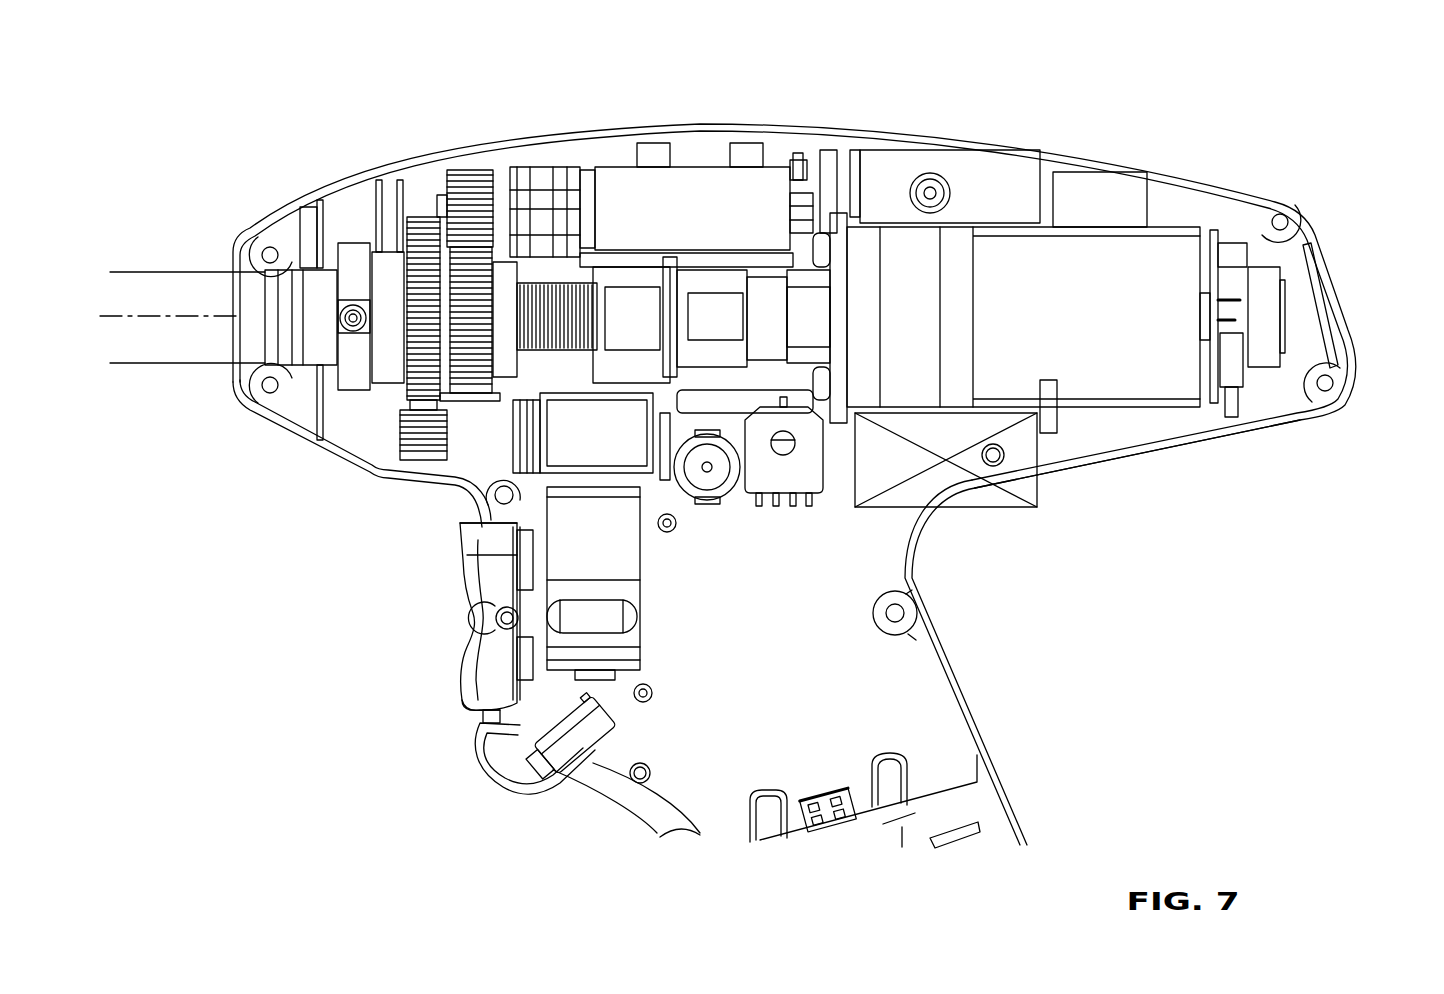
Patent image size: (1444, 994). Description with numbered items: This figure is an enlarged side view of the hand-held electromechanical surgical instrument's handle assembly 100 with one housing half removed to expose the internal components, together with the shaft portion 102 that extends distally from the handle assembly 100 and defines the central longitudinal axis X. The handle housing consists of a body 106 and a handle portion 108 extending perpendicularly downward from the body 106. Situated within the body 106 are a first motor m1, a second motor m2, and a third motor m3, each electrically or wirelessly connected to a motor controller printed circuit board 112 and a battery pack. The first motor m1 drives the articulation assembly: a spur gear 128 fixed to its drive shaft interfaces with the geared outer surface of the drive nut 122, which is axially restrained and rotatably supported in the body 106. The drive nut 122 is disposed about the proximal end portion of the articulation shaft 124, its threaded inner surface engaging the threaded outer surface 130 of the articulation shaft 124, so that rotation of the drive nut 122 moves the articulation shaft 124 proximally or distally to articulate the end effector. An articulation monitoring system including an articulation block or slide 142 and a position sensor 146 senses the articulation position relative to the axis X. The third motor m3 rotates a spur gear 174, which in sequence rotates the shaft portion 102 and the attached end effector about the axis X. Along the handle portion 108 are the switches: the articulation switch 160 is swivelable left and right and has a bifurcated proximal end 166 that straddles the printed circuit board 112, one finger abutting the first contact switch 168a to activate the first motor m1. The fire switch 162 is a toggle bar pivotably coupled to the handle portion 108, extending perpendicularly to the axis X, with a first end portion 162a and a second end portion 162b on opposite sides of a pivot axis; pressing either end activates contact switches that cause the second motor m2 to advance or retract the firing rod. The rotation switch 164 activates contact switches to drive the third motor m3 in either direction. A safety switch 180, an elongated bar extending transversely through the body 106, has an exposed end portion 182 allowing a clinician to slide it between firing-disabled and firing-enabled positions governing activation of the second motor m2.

The handle assembly 100 is at (1377, 302).
The shaft portion 102 is at (162, 353).
The body 106 is at (1190, 430).
The handle portion 108 is at (947, 638).
The motor controller printed circuit board 112 is at (897, 750).
The drive nut 122 is at (470, 263).
The articulation shaft 124 is at (633, 280).
The spur gear 128 is at (477, 172).
The threaded outer surface 130 is at (593, 303).
The articulation block or slide 142 is at (763, 267).
The position sensor 146 is at (810, 472).
The articulation switch 160 is at (513, 800).
The fire switch 162 is at (455, 627).
The first end portion 162a is at (460, 537).
The second end portion 162b is at (463, 680).
The rotation switch 164 is at (567, 557).
The bifurcated proximal end 166 is at (597, 717).
The first contact switch 168a is at (527, 727).
The spur gear 174 is at (387, 270).
The safety switch 180 is at (703, 505).
The end portion 182 is at (715, 478).
The first motor m1 is at (603, 180).
The second motor m2 is at (1077, 253).
The third motor m3 is at (560, 457).
The longitudinal axis X is at (75, 317).